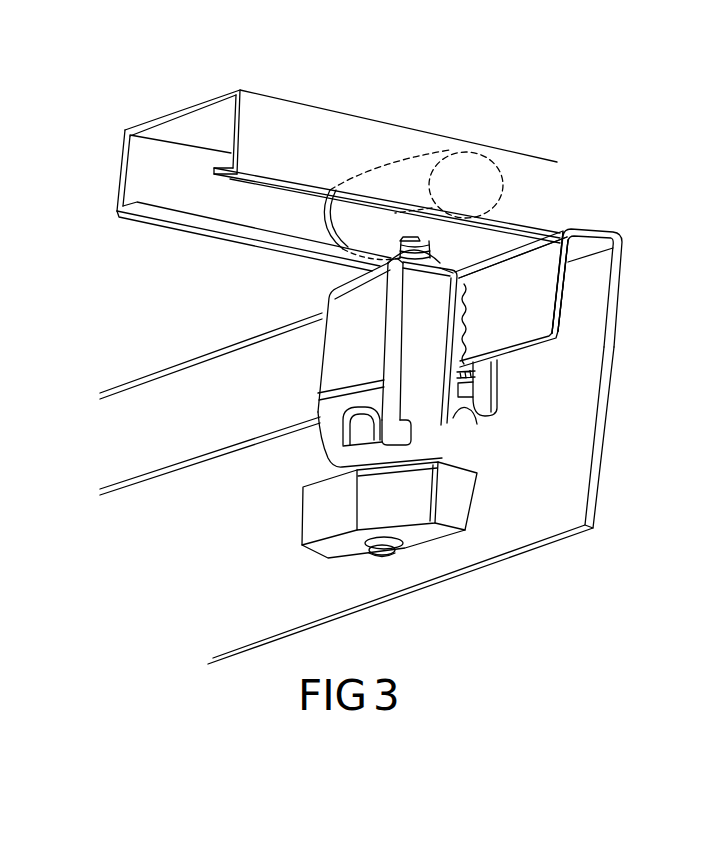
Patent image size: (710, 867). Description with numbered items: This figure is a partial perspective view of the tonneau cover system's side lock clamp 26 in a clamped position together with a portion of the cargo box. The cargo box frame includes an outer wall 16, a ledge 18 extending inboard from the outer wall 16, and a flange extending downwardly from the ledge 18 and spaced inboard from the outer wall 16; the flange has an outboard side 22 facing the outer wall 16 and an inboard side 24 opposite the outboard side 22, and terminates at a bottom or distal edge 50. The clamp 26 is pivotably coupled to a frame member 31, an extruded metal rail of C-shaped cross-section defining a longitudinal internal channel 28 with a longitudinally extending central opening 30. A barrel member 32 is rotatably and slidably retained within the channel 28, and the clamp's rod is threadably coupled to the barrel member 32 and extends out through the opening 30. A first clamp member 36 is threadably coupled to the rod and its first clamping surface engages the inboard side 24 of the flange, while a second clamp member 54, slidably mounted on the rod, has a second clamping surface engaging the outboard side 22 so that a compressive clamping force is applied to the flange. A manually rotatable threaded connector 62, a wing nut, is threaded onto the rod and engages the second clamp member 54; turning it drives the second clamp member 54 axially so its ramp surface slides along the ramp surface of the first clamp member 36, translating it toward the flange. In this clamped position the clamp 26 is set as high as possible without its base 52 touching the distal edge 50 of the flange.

The outer wall 16 is at (603, 395).
The ledge 18 is at (596, 233).
The outboard side 22 is at (563, 317).
The inboard side 24 is at (527, 307).
The side lock clamp 26 is at (288, 279).
The longitudinal internal channel 28 is at (119, 170).
The central opening 30 is at (233, 208).
The frame member 31 is at (302, 140).
The barrel member 32 is at (505, 180).
The first clamp member 36 is at (300, 374).
The distal edge 50 is at (532, 347).
The base 52 is at (460, 412).
The second clamp member 54 is at (520, 400).
The threaded connector 62 is at (287, 523).